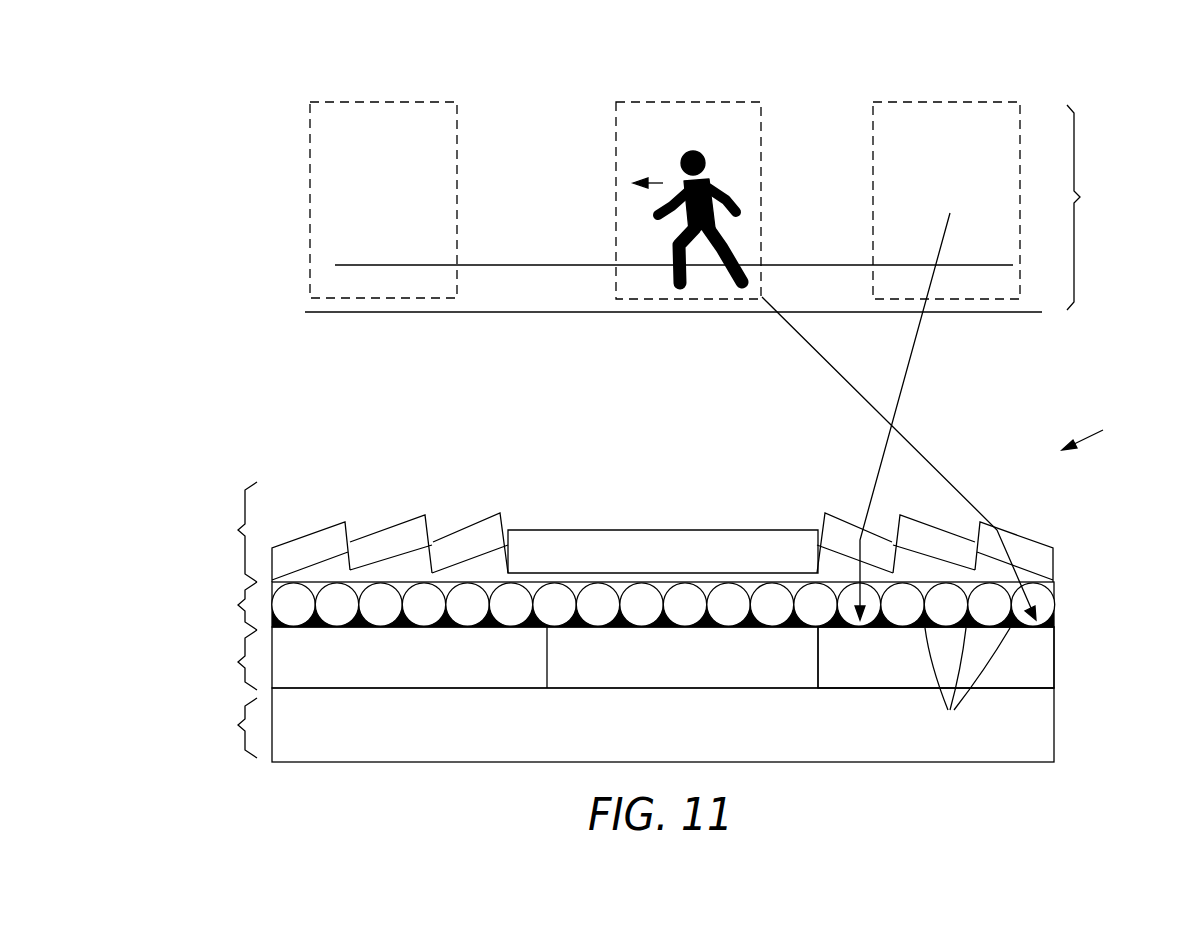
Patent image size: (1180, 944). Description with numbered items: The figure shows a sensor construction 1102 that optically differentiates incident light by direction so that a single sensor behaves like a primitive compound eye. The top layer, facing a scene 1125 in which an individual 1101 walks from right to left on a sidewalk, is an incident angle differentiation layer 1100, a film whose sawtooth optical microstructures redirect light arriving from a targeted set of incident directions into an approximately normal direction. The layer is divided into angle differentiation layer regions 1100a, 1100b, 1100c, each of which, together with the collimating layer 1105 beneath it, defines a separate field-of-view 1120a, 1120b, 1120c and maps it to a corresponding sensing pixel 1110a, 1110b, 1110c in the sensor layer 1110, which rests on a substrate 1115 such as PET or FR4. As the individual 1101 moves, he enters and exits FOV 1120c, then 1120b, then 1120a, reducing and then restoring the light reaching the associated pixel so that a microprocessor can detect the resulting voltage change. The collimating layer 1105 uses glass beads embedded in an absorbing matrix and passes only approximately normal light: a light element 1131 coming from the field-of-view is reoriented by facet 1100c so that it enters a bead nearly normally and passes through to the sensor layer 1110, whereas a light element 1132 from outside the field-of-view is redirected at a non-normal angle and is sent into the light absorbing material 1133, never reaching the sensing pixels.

The incident angle differentiation layer 1100 is at (620, 532).
The angle differentiation layer region 1100a is at (418, 567).
The angle differentiation layer region 1100b is at (700, 565).
The angle differentiation layer region 1100c is at (962, 567).
The individual 1101 is at (718, 187).
The sensor construction 1102 is at (1108, 434).
The collimating layer 1105 is at (621, 606).
The sensor layer 1110 is at (621, 658).
The sensing pixel 1110a is at (432, 672).
The sensing pixel 1110b is at (708, 672).
The sensor pixel 1110c is at (898, 670).
The substrate 1115 is at (621, 725).
The field-of-view 1120a is at (405, 110).
The field-of-view 1120b is at (684, 112).
The field-of-view 1120c is at (922, 112).
The scene 1125 is at (1101, 207).
The light element 1131 is at (878, 470).
The light element 1132 is at (933, 466).
The light absorbing material 1133 is at (967, 684).